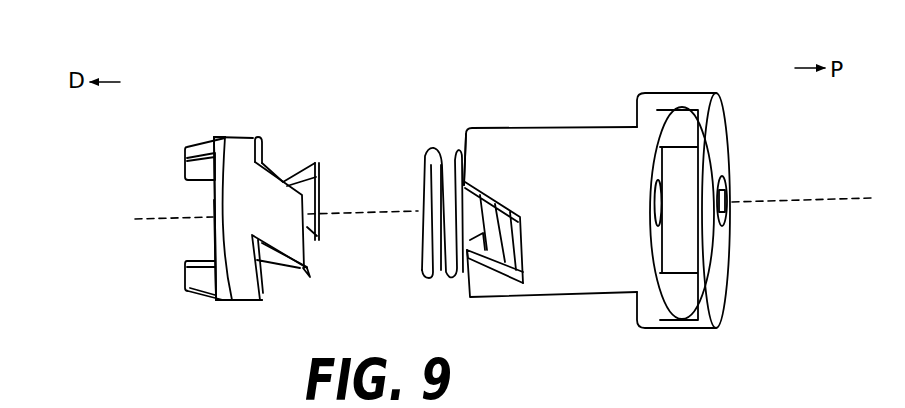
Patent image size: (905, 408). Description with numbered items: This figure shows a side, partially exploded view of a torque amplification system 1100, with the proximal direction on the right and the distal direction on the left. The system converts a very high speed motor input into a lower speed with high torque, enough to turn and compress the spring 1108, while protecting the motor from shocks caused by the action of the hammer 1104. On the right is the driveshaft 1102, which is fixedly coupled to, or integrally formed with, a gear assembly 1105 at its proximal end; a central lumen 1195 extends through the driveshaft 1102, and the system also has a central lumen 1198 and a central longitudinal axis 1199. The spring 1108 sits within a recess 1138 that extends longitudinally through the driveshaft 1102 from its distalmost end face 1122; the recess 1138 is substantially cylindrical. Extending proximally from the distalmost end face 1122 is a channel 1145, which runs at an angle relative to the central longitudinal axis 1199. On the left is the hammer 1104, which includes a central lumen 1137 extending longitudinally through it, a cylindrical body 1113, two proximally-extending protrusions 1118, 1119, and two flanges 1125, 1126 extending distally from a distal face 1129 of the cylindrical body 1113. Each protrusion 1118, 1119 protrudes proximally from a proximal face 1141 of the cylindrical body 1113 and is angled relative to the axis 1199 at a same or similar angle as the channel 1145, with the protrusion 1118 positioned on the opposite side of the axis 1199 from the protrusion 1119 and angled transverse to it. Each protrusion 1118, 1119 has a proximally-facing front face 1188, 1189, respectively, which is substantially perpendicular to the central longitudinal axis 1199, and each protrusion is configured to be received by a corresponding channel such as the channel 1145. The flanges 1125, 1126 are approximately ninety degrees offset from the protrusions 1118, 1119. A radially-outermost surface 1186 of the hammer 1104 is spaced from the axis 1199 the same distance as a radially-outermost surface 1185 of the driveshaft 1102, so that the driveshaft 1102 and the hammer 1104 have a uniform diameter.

The torque amplification system 1100 is at (502, 93).
The driveshaft 1102 is at (545, 148).
The hammer 1104 is at (245, 143).
The gear assembly 1105 is at (675, 127).
The spring 1108 is at (428, 263).
The cylindrical body 1113 is at (228, 282).
The protrusion 1118 is at (317, 165).
The protrusion 1119 is at (300, 258).
The distalmost end face 1122 is at (465, 283).
The flange 1125 is at (197, 147).
The flange 1126 is at (197, 283).
The distal face 1129 is at (205, 200).
The central lumen 1137 is at (200, 240).
The recess 1138 is at (459, 143).
The proximal face 1141 is at (258, 148).
The channel 1145 is at (491, 257).
The radially-outermost surface 1185 is at (613, 147).
The radially-outermost surface 1186 is at (228, 140).
The proximally-facing front face 1188 is at (321, 178).
The proximally-facing front face 1189 is at (316, 260).
The central lumen 1195 is at (722, 213).
The central lumen 1198 is at (722, 184).
The central longitudinal axis 1199 is at (140, 220).